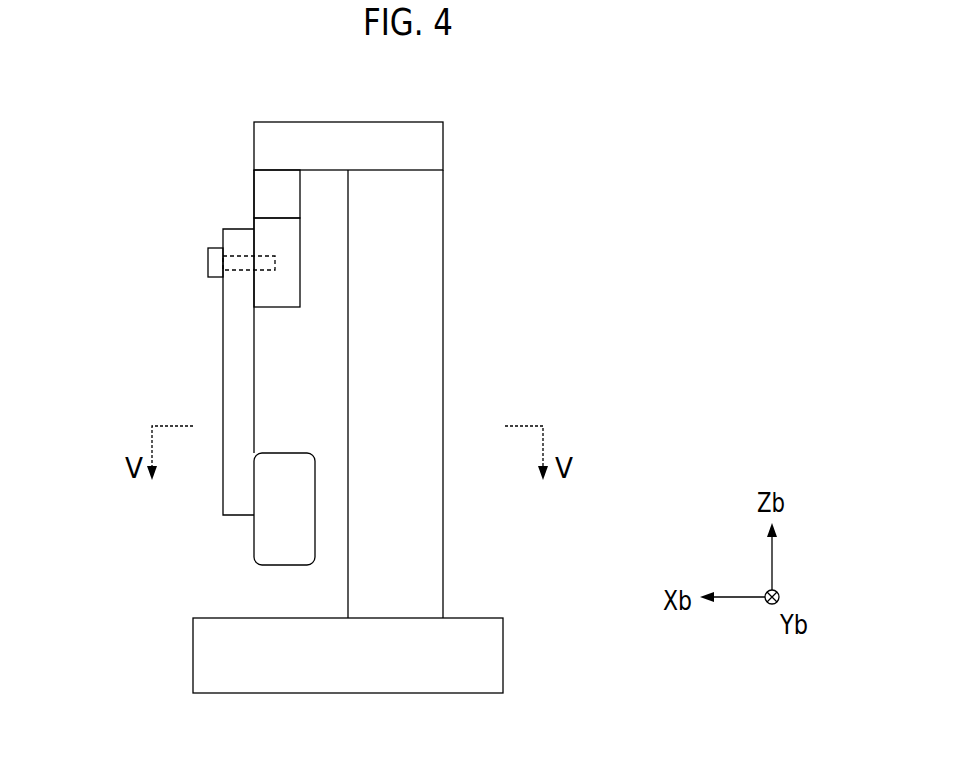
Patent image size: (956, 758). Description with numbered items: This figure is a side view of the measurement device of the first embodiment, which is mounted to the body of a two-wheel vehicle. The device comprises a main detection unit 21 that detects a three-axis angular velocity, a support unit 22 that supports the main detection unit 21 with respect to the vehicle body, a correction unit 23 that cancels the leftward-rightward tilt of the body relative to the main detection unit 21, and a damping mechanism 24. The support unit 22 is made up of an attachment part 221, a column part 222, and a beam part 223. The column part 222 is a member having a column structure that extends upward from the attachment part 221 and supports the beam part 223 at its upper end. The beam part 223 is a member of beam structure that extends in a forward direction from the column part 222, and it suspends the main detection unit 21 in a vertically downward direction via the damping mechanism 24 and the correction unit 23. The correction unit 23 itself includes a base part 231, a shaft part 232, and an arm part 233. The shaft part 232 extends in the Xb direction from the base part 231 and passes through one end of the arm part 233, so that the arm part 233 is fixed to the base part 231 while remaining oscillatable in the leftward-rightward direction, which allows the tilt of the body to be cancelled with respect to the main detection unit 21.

The main detection unit 21 is at (275, 536).
The support unit 22 is at (476, 248).
The attachment part 221 is at (487, 657).
The column part 222 is at (402, 358).
The beam part 223 is at (348, 145).
The correction unit 23 is at (170, 331).
The base part 231 is at (272, 237).
The shaft part 232 is at (215, 259).
The arm part 233 is at (238, 372).
The damping mechanism 24 is at (270, 197).